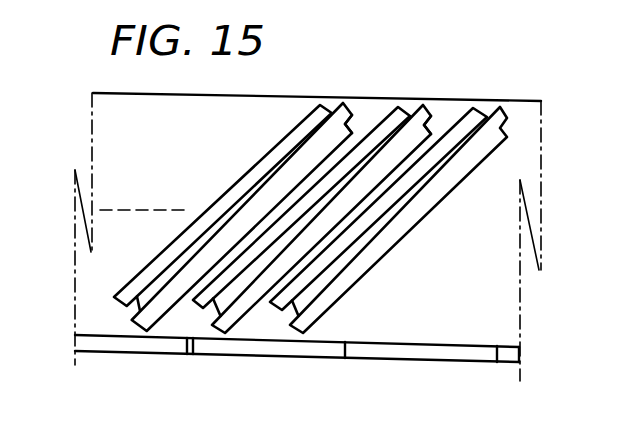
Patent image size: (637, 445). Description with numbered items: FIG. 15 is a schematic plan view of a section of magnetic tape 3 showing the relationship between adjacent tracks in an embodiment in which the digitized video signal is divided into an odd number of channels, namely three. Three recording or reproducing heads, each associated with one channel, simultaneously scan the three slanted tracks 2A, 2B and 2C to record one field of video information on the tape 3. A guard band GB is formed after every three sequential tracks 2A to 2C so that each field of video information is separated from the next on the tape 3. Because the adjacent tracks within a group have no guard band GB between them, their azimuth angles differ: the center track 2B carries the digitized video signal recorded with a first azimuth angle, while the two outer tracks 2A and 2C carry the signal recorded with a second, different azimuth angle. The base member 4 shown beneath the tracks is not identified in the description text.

The track 2A is at (227, 317).
The center track 2B is at (208, 303).
The track 2C is at (183, 305).
The tape 3 is at (470, 328).
The base bar 4 is at (401, 351).
The guard band GB is at (346, 140).